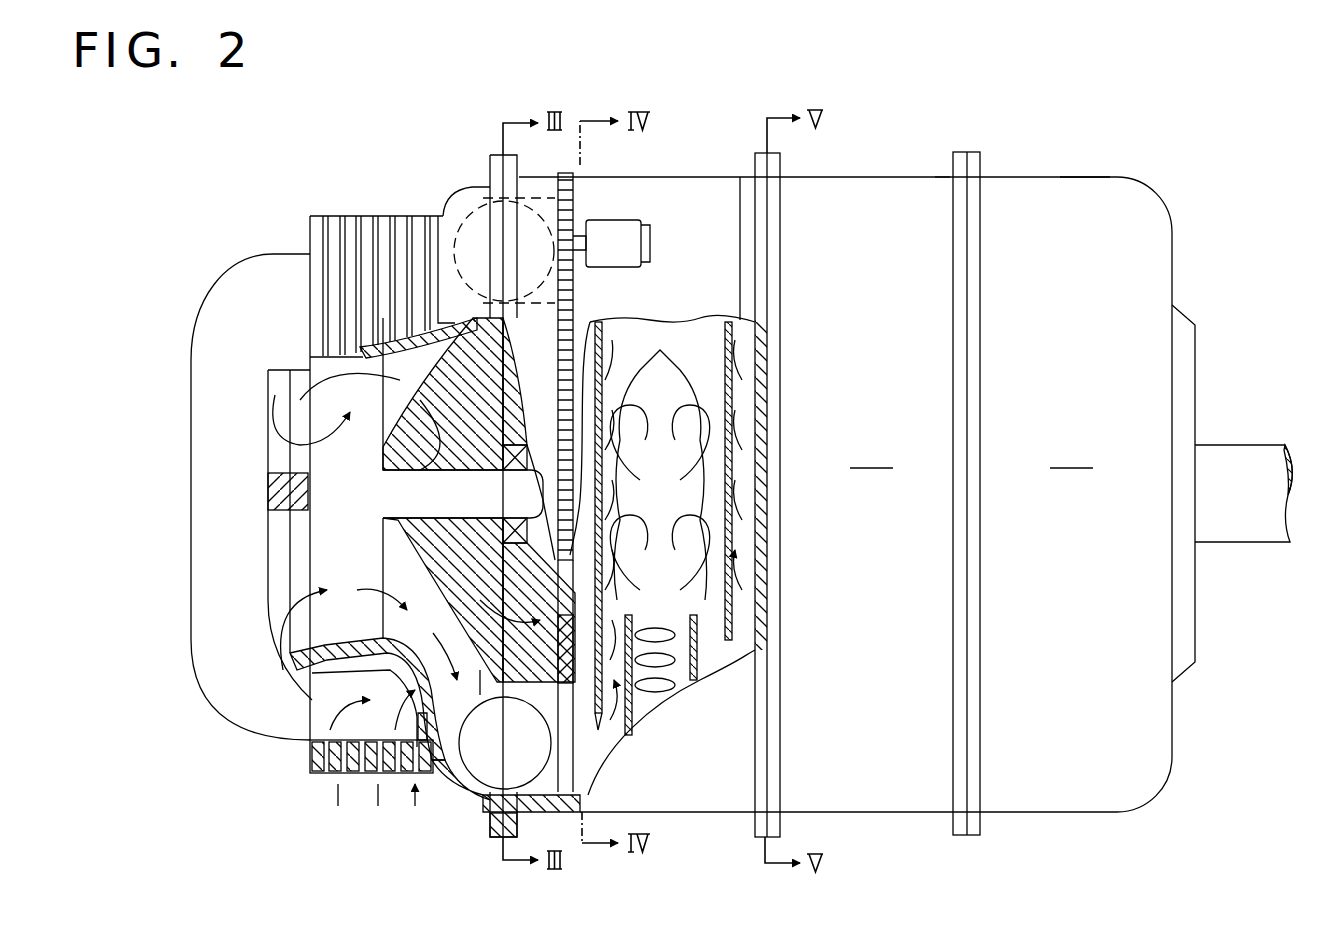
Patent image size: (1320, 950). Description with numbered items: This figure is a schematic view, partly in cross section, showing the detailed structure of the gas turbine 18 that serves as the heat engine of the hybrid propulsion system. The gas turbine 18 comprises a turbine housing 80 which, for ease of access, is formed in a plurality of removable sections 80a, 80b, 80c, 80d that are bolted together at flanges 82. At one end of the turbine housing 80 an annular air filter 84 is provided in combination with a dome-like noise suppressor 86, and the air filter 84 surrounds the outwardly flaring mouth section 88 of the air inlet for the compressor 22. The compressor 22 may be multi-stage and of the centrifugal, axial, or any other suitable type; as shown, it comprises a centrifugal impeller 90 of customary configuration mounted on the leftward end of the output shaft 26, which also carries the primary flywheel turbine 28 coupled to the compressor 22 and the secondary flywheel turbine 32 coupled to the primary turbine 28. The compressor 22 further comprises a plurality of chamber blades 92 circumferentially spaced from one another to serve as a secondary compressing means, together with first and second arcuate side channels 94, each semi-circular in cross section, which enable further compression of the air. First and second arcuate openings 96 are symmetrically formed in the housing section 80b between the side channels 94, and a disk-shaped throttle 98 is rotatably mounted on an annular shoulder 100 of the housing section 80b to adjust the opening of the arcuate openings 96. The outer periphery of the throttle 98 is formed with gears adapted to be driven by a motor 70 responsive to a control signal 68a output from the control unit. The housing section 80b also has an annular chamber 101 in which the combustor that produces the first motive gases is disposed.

The gas turbine 18 is at (791, 422).
The compressor 22 is at (378, 392).
The output shaft 26 is at (385, 495).
The primary flywheel turbine 28 is at (871, 454).
The secondary flywheel turbine 32 is at (1071, 454).
The control signal 68a is at (605, 216).
The motor 70 is at (640, 178).
The turbine housing 80 is at (858, 165).
The housing section 80a is at (472, 188).
The housing section 80b is at (741, 176).
The housing section 80c is at (935, 177).
The housing section 80d is at (1060, 177).
The flanges 82 is at (492, 170).
The annular air filter 84 is at (333, 215).
The dome-like noise suppressor 86 is at (263, 282).
The outwardly flaring mouth section 88 is at (369, 708).
The centrifugal impeller 90 is at (385, 623).
The chamber blades 92 is at (470, 795).
The arcuate side channels 94 is at (500, 812).
The arcuate openings 96 is at (560, 812).
The throttle 98 is at (580, 812).
The annular shoulder 100 is at (455, 775).
The annular chamber 101 is at (767, 598).